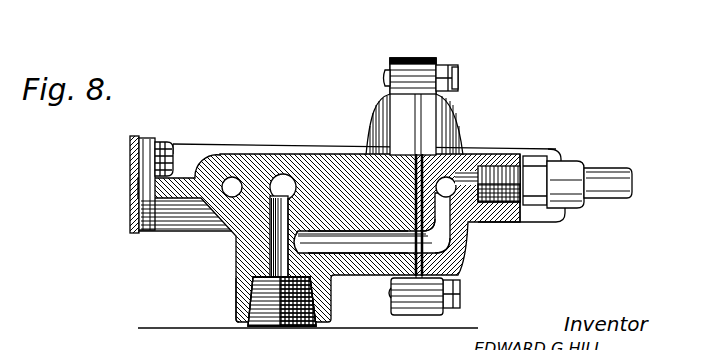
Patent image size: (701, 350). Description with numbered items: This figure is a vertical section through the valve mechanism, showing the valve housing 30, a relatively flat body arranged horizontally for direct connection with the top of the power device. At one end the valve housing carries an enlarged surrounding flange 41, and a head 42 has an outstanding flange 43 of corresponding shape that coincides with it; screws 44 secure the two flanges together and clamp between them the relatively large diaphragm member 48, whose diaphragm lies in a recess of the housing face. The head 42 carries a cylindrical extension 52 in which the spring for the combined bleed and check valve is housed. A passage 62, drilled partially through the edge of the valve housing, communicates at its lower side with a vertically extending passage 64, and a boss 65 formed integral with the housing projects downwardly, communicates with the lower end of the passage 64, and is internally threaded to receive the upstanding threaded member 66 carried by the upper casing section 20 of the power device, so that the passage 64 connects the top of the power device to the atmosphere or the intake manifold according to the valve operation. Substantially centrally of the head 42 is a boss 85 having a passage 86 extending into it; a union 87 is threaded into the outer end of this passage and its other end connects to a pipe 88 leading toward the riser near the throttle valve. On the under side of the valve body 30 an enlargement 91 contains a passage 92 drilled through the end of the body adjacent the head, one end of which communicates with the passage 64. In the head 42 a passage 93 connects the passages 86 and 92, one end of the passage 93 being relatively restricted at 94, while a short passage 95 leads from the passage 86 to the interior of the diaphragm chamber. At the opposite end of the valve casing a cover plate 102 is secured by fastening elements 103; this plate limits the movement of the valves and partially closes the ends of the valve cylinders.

The upper casing section 20 is at (150, 320).
The valve housing 30 is at (318, 144).
The enlarged surrounding flange 41 is at (388, 50).
The head 42 is at (452, 270).
The outstanding flange 43 is at (436, 56).
The screws 44 is at (449, 62).
The diaphragm member 48 is at (413, 51).
The cylindrical extension 52 is at (540, 148).
The passage 62 is at (275, 172).
The vertically extending passage 64 is at (262, 237).
The boss 65 is at (228, 292).
The upstanding threaded member 66 is at (260, 308).
The boss 85 is at (497, 142).
The passage 86 is at (452, 190).
The union 87 is at (564, 155).
The pipe 88 is at (609, 167).
The enlargement 91 is at (345, 262).
The passage 92 is at (373, 246).
The passage 93 is at (447, 243).
The restricted portion 94 is at (462, 226).
The short passage 95 is at (462, 149).
The cover plate 102 is at (122, 151).
The fastening elements 103 is at (156, 136).